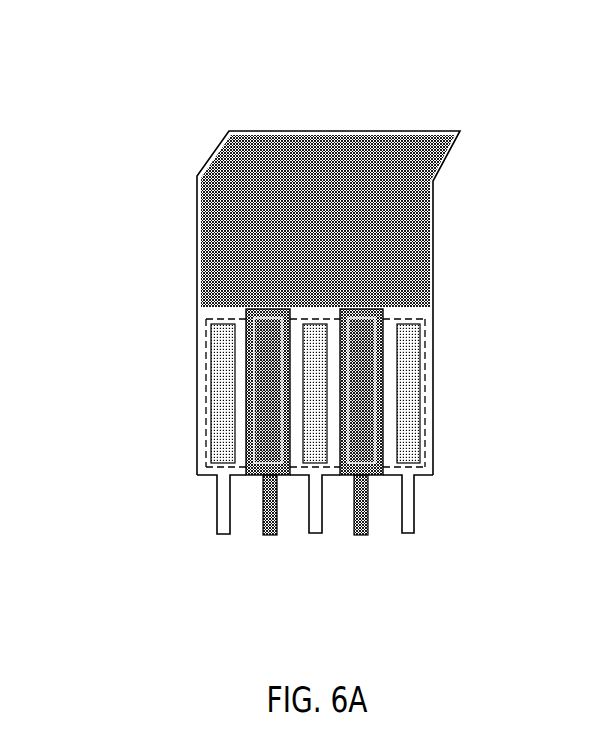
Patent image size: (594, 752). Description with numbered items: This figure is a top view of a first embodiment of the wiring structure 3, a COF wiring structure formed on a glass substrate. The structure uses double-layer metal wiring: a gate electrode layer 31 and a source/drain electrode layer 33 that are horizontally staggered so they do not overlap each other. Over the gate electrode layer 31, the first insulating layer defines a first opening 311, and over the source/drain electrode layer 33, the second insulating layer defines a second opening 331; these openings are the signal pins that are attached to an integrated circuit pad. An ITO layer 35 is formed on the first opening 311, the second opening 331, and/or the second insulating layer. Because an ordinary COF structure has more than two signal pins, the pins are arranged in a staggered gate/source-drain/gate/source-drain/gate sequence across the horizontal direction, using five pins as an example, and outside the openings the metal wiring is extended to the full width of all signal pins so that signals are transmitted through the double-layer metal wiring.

The wiring structure 3 is at (500, 134).
The gate electrode layer 31 is at (197, 228).
The source/drain electrode layer 33 is at (398, 254).
The ITO layer 35 is at (236, 316).
The first opening 311 is at (222, 414).
The second opening 331 is at (360, 395).